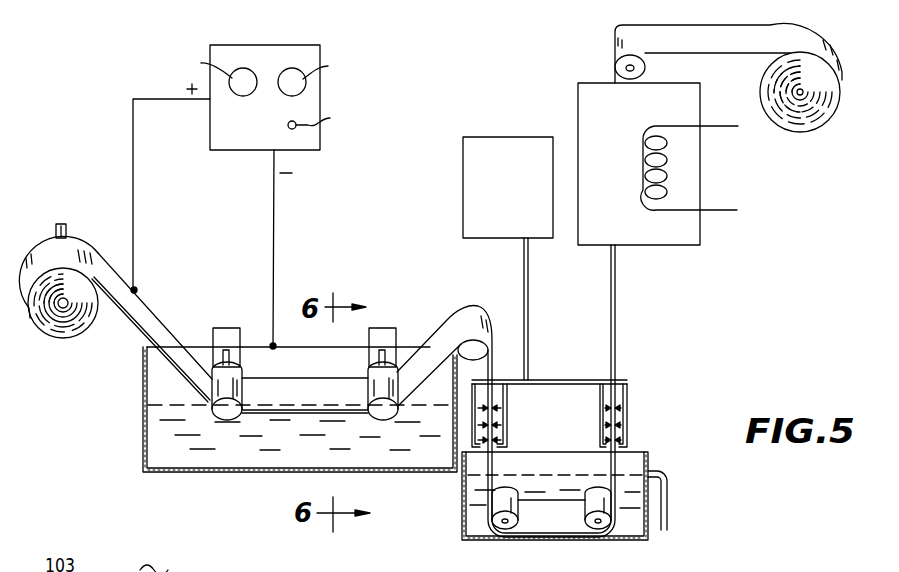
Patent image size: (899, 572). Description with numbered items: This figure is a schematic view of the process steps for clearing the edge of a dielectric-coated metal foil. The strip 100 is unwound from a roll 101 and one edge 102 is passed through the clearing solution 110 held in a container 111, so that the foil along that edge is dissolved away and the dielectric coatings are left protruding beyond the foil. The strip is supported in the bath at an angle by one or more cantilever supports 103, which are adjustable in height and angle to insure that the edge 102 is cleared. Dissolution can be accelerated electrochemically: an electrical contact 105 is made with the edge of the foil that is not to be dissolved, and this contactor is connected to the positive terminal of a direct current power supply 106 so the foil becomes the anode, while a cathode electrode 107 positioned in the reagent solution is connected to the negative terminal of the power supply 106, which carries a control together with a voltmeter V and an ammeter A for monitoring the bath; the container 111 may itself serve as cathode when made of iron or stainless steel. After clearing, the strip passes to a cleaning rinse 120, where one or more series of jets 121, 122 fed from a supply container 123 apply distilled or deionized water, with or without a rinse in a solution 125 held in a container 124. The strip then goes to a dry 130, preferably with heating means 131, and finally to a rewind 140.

The strip 100 is at (143, 332).
The roll 101 is at (60, 308).
The edge 102 is at (187, 380).
The cantilever supports 103 is at (223, 330).
The electrical contact 105 is at (134, 290).
The direct current power supply 106 is at (320, 100).
The cathode electrode 107 is at (273, 345).
The clearing solution 110 is at (242, 455).
The container 111 is at (285, 472).
The cleaning rinse 120 is at (455, 509).
The series of jets 121 is at (508, 412).
The series of jets 122 is at (628, 415).
The supply container 123 is at (473, 207).
The container 124 is at (660, 531).
The solution 125 is at (632, 522).
The dry 130 is at (700, 238).
The heating means 131 is at (667, 163).
The rewind 140 is at (827, 112).